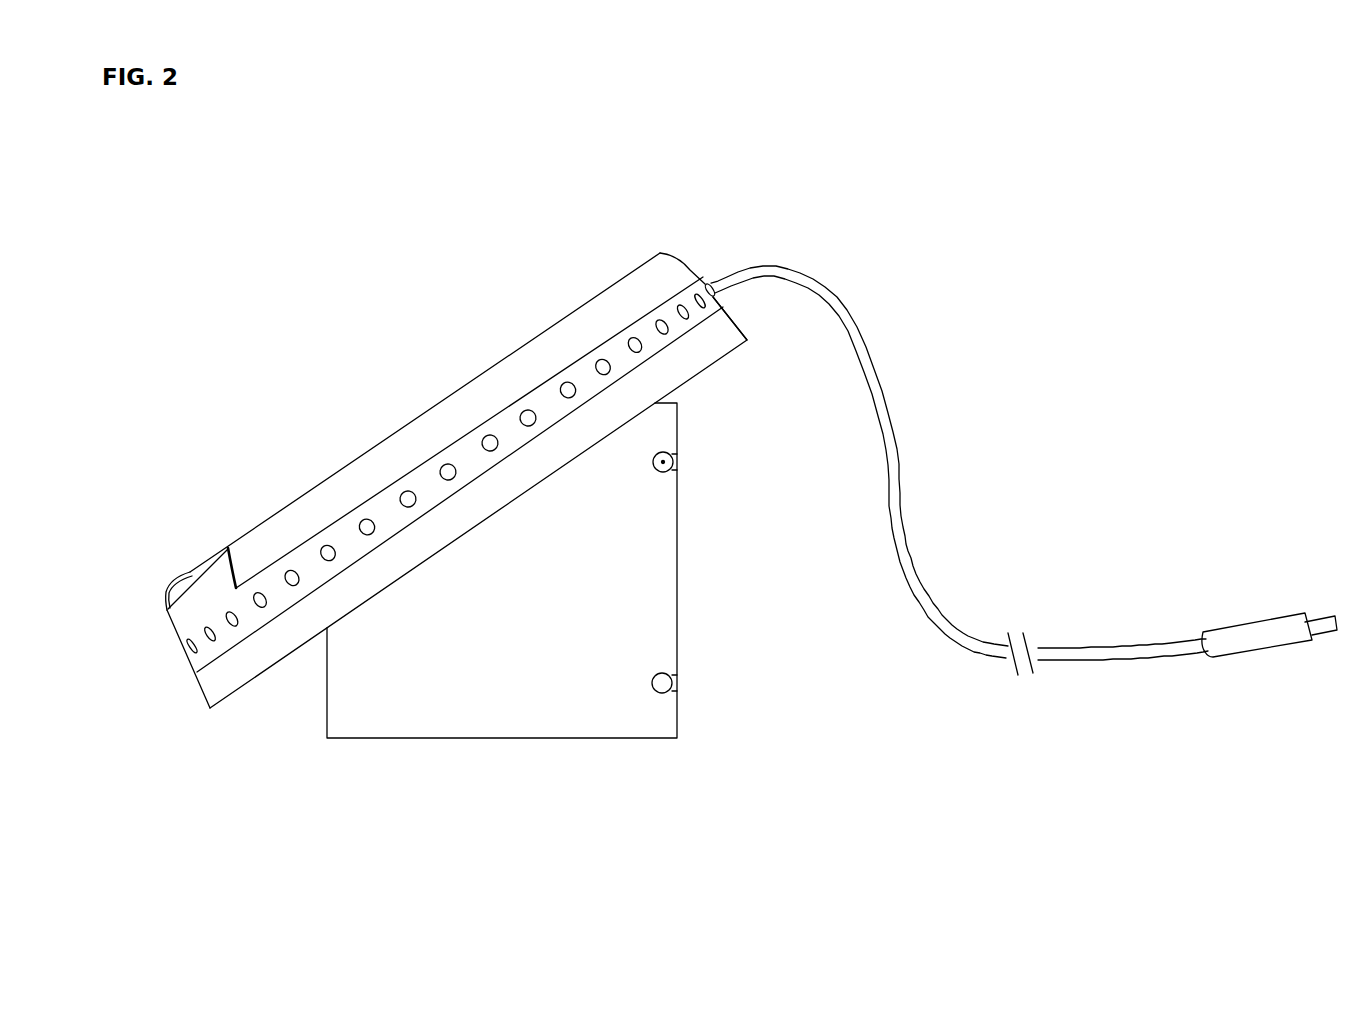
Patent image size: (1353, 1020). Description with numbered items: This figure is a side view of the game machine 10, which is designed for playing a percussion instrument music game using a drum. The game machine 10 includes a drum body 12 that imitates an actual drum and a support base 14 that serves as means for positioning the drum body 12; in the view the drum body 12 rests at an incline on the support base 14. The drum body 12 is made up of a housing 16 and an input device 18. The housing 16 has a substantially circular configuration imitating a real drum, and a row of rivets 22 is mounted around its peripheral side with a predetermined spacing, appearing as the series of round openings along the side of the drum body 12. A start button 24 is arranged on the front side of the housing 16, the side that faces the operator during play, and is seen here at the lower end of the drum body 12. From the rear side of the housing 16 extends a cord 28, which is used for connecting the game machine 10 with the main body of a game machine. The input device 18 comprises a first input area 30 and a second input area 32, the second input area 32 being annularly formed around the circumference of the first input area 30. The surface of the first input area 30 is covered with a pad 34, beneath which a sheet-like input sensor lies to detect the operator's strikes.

The game machine 10 is at (776, 150).
The drum body 12 is at (680, 243).
The support base 14 is at (662, 645).
The housing 16 is at (237, 509).
The input device 18 is at (407, 330).
The rivets 22 is at (453, 482).
The start button 24 is at (163, 583).
The cord 28 is at (878, 360).
The first input area 30 is at (418, 408).
The second input area 32 is at (383, 454).
The pad 34 is at (537, 335).